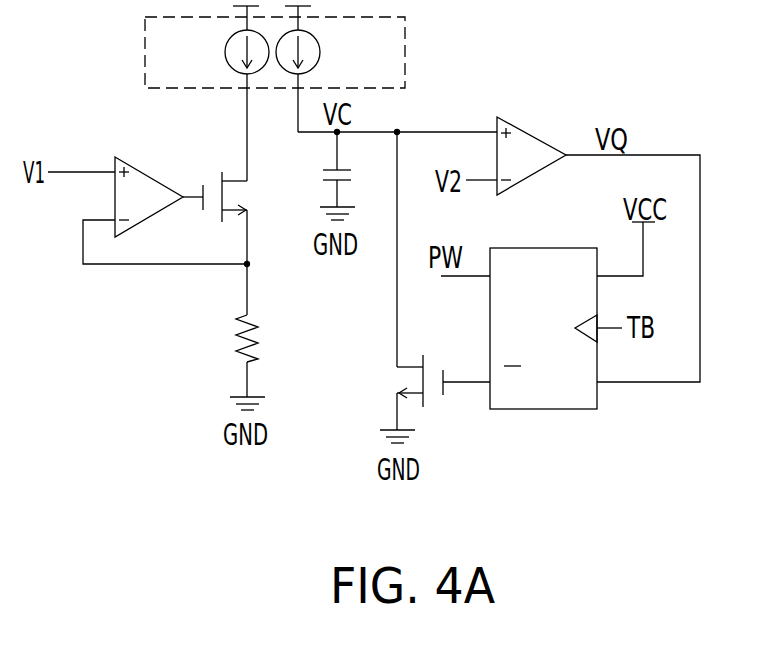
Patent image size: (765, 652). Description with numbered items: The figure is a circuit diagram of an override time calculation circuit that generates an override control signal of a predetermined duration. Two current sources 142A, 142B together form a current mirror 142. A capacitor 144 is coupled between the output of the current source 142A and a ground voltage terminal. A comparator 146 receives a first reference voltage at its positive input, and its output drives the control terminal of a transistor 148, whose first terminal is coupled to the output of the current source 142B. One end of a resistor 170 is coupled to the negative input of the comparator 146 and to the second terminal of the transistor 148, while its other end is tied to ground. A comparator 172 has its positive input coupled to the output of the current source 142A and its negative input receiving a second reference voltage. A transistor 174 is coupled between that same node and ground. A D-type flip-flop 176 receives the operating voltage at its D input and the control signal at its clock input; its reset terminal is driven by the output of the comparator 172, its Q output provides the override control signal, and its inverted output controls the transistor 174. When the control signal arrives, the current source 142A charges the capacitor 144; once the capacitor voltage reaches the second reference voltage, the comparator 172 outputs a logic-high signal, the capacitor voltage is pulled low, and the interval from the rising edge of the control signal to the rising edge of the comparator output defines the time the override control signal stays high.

The current mirror 142 is at (405, 23).
The current source 142A is at (329, 40).
The current source 142B is at (215, 40).
The capacitor 144 is at (359, 169).
The comparator 146 is at (152, 172).
The transistor 148 is at (220, 218).
The resistor 170 is at (271, 330).
The comparator 172 is at (537, 135).
The transistor 174 is at (397, 392).
The flip-flop 176 is at (567, 247).